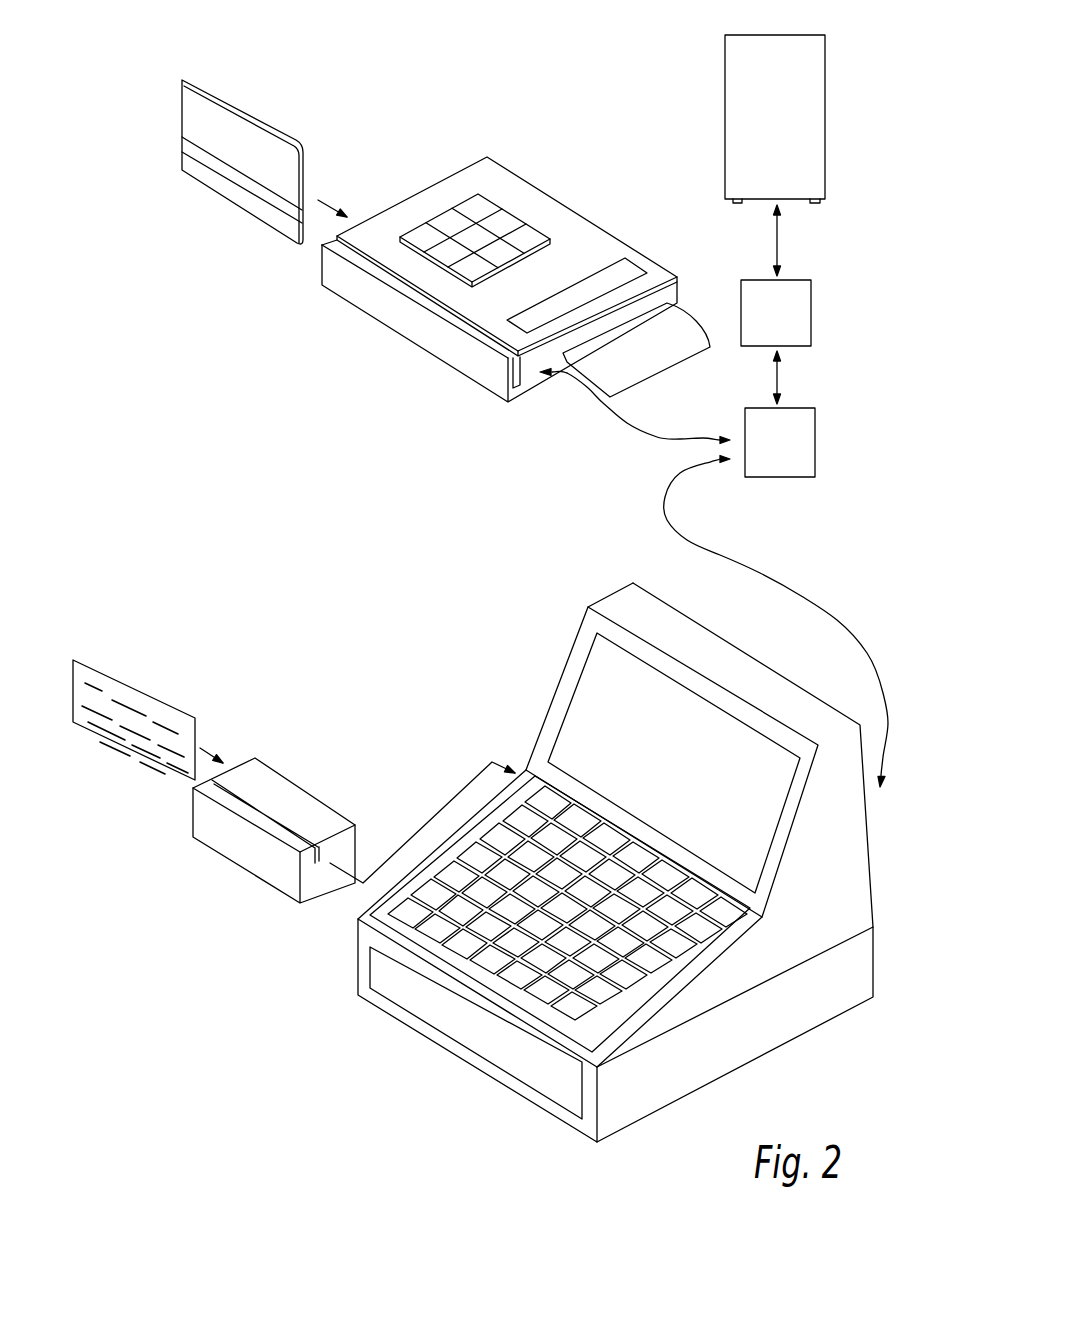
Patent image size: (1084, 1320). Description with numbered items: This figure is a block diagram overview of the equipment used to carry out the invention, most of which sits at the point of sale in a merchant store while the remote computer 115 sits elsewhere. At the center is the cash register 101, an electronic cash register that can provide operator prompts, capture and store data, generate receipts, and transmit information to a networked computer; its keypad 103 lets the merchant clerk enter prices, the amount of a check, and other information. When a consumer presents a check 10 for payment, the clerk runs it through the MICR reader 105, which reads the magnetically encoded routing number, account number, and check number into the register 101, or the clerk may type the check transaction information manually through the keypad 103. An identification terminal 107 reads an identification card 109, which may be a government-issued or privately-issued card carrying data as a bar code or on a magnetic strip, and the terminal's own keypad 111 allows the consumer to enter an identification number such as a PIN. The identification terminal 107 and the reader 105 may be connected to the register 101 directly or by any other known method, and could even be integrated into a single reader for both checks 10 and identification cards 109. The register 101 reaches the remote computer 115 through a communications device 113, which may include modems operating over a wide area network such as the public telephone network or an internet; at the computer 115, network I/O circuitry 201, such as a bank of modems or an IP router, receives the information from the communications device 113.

The cash register 101 is at (692, 1002).
The keypad 103 is at (499, 966).
The MICR reader 105 is at (267, 800).
The identification terminal 107 is at (388, 315).
The identification card 109 is at (268, 220).
The keypad 111 is at (505, 226).
The communications device 113 is at (802, 415).
The remote computer 115 is at (723, 78).
The network I/O circuitry 201 is at (744, 278).
The check 10 is at (137, 700).